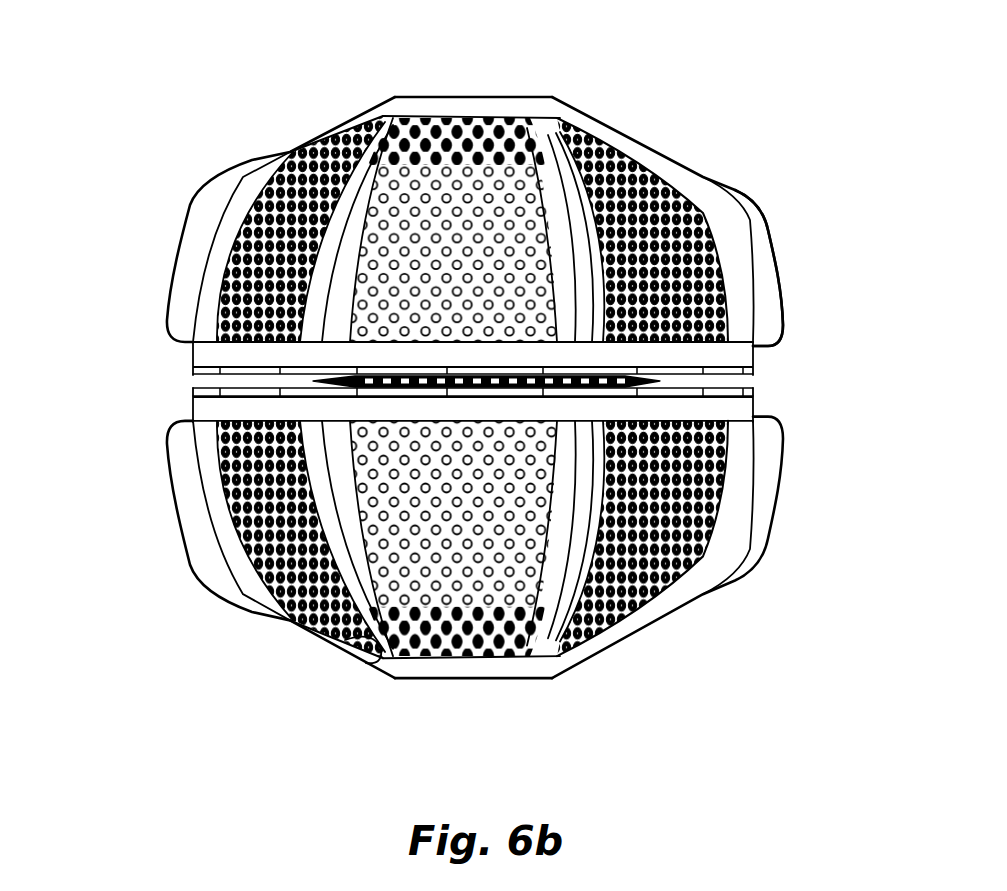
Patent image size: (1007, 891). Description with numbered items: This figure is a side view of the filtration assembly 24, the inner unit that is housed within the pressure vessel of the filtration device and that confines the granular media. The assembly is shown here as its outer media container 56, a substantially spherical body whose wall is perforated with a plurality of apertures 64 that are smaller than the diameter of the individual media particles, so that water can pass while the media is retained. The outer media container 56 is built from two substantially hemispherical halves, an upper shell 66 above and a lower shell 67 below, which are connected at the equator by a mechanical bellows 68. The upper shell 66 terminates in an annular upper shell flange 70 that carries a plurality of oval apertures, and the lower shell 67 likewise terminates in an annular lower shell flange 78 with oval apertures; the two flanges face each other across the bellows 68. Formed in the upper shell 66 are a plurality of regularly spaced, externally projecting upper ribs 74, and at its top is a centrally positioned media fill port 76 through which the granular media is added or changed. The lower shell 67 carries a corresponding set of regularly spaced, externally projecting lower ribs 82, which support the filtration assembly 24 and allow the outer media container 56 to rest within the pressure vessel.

The filtration assembly 24 is at (692, 125).
The outer media container 56 is at (397, 100).
The upper shell 66 is at (458, 104).
The media fill port 76 is at (517, 97).
The upper ribs 74 is at (757, 262).
The upper shell flange 70 is at (207, 353).
The mechanical bellows 68 is at (745, 364).
The lower shell flange 78 is at (207, 407).
The lower ribs 82 is at (741, 545).
The apertures 64 is at (372, 643).
The lower shell 67 is at (477, 670).